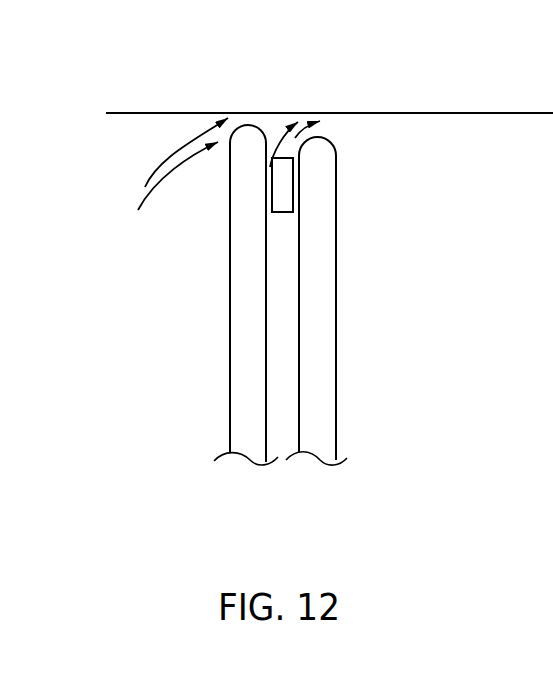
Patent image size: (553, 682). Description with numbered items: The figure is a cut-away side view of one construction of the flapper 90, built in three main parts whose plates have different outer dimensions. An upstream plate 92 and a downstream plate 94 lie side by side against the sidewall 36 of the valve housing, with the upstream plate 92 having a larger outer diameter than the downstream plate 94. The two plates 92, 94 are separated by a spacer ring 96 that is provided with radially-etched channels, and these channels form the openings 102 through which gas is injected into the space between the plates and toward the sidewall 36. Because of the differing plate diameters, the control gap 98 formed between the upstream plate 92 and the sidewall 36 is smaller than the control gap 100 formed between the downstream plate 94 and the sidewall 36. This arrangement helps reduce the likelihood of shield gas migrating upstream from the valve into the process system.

The sidewall 36 is at (148, 113).
The flapper 90 is at (259, 295).
The upstream plate 92 is at (248, 276).
The downstream plate 94 is at (315, 295).
The spacer ring 96 is at (282, 190).
The control gap 98 is at (258, 95).
The control gap 100 is at (338, 126).
The openings 102 is at (293, 116).